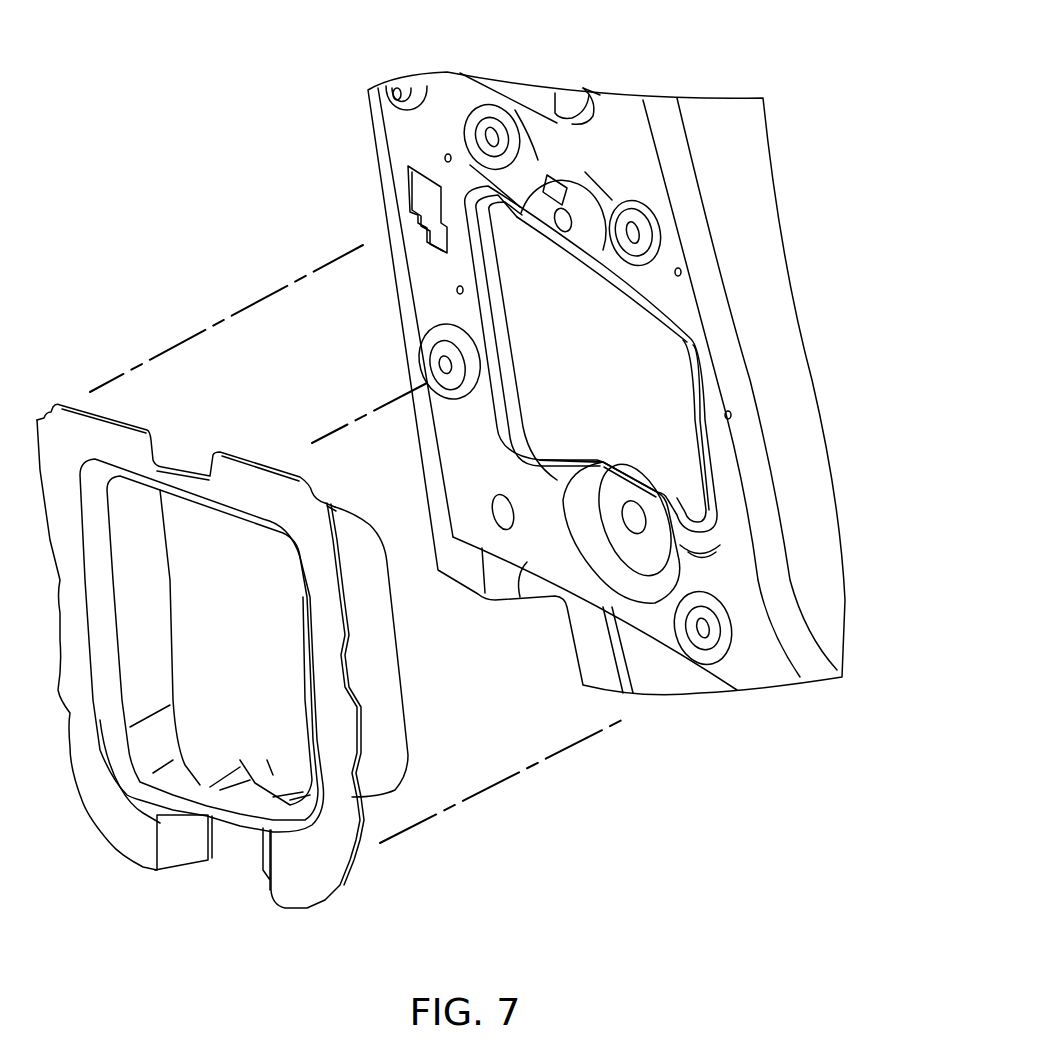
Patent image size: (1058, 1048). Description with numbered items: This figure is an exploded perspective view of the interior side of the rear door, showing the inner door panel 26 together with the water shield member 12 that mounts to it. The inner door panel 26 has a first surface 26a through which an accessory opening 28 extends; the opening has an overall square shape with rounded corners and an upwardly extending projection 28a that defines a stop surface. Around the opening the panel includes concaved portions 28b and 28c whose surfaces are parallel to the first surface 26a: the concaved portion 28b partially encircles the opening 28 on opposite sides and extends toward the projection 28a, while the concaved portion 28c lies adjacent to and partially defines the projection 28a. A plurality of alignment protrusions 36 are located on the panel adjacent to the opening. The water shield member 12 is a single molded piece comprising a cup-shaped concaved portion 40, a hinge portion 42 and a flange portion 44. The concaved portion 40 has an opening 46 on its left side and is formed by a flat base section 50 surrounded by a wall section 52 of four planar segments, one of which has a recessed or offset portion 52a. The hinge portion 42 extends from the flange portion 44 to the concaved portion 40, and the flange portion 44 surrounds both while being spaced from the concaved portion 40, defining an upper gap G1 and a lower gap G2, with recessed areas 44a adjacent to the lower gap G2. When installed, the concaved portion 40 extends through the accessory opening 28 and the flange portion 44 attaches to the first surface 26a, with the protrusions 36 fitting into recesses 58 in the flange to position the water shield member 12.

The water shield member 12 is at (232, 629).
The inner door panel 26 is at (589, 359).
The first surface 26a is at (625, 138).
The accessory opening 28 is at (520, 362).
The upwardly extending projection 28a is at (607, 462).
The concaved portion 28b is at (520, 420).
The concaved portion 28c is at (642, 488).
The alignment protrusions 36 is at (443, 160).
The cup-shaped concaved portion 40 is at (232, 632).
The hinge portion 42 is at (105, 617).
The flange portion 44 is at (107, 812).
The recessed areas 44a is at (197, 850).
The opening 46 is at (113, 562).
The base section 50 is at (218, 648).
The wall section 52 is at (383, 730).
The recessed or offset portion 52a is at (273, 777).
The recesses 58 is at (50, 412).
The upper gap G1 is at (153, 448).
The lower gap G2 is at (213, 845).